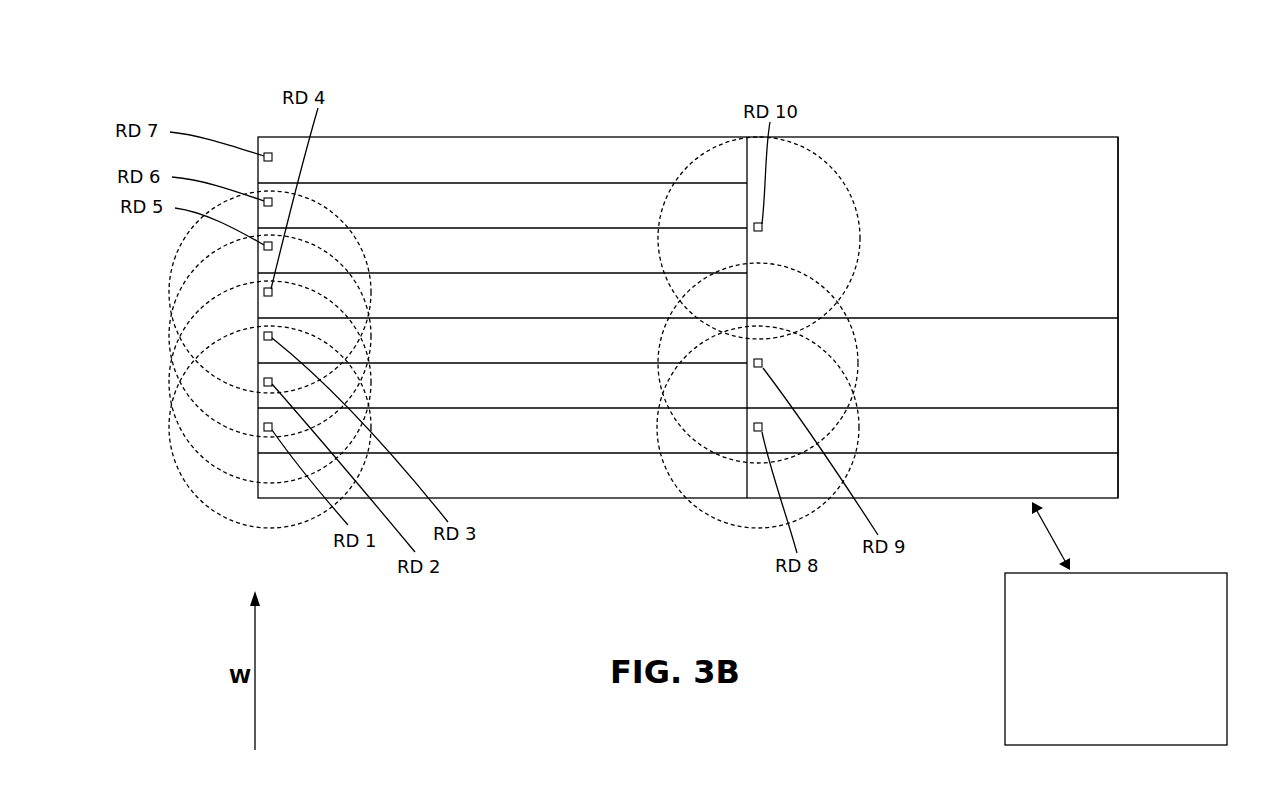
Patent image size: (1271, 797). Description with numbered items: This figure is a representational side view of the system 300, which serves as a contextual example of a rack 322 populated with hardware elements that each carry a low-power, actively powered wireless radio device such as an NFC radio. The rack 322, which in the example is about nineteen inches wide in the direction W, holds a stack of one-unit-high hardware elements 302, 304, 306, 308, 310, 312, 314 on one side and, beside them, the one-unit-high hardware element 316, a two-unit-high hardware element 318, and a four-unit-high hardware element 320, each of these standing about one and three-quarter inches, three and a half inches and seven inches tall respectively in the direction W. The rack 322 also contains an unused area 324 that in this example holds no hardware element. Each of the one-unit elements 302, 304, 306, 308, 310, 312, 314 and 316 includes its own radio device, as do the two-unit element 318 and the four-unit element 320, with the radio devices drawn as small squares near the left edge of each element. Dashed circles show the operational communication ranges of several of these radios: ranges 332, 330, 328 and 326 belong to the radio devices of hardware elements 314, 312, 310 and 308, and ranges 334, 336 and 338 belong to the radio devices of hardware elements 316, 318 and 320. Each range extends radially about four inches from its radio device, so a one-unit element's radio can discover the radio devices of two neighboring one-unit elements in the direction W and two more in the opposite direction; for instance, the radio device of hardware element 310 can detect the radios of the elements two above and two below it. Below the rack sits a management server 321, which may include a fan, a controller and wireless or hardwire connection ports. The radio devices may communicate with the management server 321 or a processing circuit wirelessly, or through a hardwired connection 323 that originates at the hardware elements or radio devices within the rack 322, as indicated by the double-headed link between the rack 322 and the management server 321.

The system 300 is at (188, 58).
The 1U hardware element 302 is at (533, 172).
The 1U hardware element 304 is at (533, 217).
The 1U hardware element 306 is at (533, 262).
The 1U hardware element 308 is at (533, 307).
The 1U hardware element 310 is at (533, 352).
The 1U hardware element 312 is at (533, 397).
The 1U hardware element 314 is at (533, 442).
The 1U hardware element 316 is at (967, 439).
The 2U hardware element 318 is at (967, 369).
The 4U hardware element 320 is at (967, 242).
The management server 321 is at (1176, 573).
The rack 322 is at (678, 120).
The hardwired connection 323 is at (1052, 537).
The unused area 324 is at (1147, 476).
The operational communication range 326 is at (178, 264).
The operational communication range 328 is at (176, 337).
The operational communication range 330 is at (176, 382).
The operational communication range 332 is at (176, 427).
The operational communication range 334 is at (703, 514).
The operational communication range 336 is at (848, 308).
The operational communication range 338 is at (833, 168).